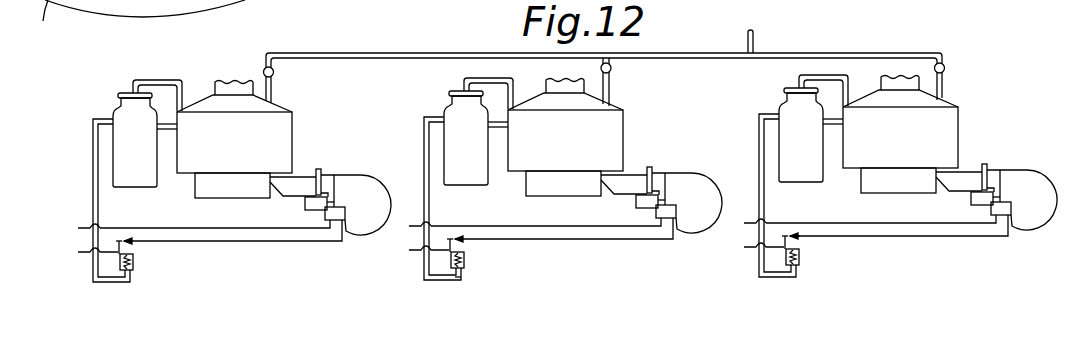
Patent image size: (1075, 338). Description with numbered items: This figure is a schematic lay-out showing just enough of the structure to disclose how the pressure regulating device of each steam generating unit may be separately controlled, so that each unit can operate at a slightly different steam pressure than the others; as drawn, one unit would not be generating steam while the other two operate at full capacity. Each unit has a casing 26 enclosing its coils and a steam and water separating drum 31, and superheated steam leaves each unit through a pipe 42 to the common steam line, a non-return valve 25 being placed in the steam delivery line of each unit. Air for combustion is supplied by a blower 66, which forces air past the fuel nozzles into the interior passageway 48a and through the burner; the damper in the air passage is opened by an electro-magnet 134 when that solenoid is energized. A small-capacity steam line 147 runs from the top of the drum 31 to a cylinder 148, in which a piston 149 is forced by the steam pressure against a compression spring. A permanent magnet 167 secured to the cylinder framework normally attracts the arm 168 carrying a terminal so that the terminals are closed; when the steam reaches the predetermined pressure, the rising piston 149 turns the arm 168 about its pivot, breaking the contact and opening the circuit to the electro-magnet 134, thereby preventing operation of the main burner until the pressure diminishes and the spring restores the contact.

The pipe 42 is at (472, 49).
The non-return valve 25 is at (265, 70).
The casing 26 is at (283, 135).
The steam and water separating drum 31 is at (134, 181).
The blower 66 is at (375, 193).
The electro-magnet 134 is at (341, 209).
The steam line 147 is at (92, 162).
The cylinder 148 is at (503, 301).
The piston 149 is at (198, 285).
The permanent magnet 167 is at (792, 234).
The arm 168 is at (124, 246).
The interior passageway 48a is at (86, 46).